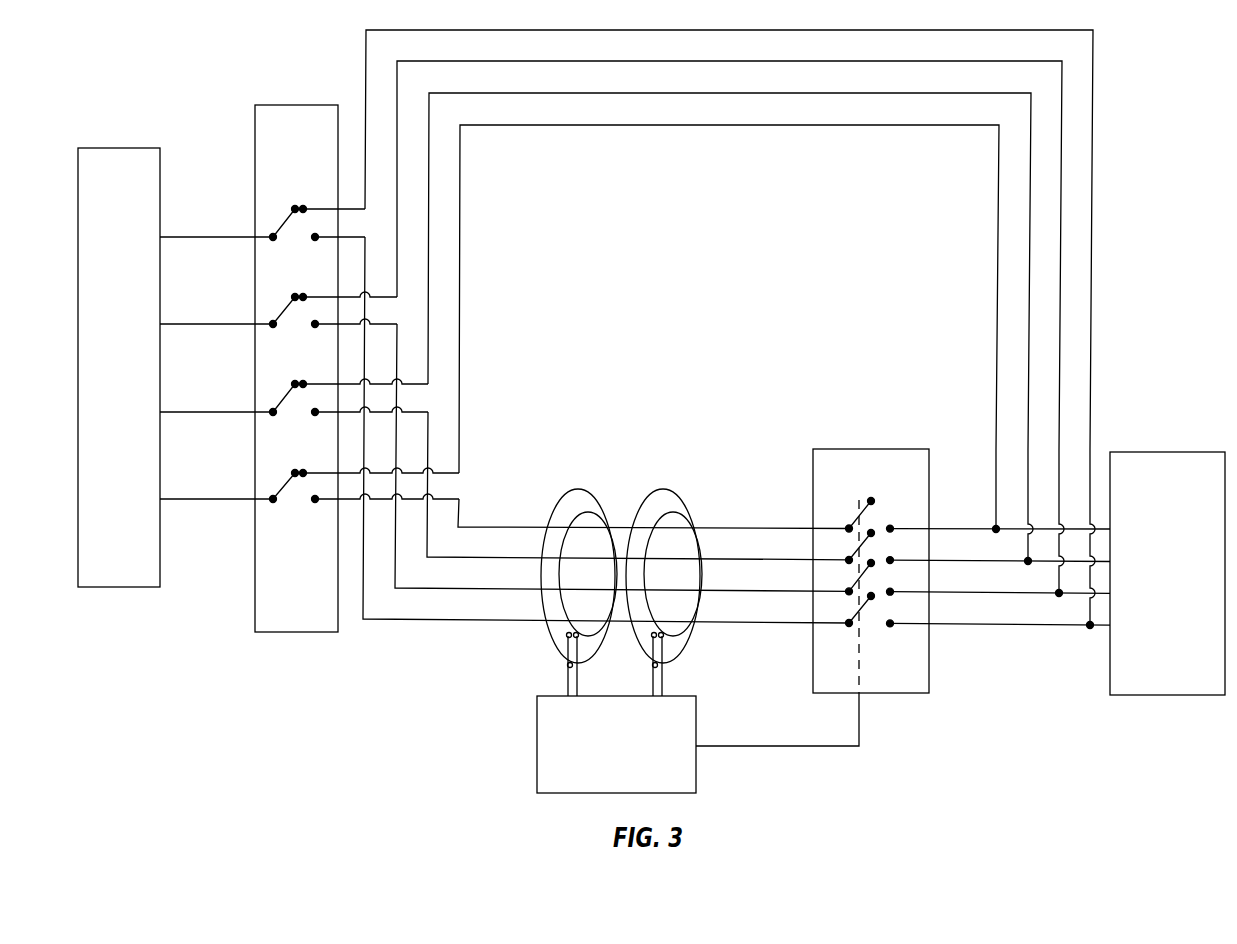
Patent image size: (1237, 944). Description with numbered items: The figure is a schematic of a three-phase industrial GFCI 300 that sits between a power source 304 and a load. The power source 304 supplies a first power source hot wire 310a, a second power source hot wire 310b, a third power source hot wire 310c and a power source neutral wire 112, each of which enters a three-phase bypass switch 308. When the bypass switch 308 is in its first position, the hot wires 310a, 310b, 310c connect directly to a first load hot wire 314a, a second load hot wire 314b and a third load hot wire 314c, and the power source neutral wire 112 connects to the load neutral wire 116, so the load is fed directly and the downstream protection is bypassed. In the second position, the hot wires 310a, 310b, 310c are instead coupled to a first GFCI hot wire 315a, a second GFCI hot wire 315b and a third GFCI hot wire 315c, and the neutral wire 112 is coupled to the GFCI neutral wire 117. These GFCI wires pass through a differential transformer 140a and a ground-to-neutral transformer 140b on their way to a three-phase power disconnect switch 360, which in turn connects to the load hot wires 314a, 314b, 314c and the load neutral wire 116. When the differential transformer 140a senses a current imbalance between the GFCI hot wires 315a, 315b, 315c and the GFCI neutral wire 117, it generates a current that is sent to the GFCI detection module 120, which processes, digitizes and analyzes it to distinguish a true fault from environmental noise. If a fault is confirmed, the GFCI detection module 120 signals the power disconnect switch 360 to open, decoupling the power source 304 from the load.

The 3-phase industrial GFCI 300 is at (1145, 66).
The power source 304 is at (104, 148).
The 3-phase bypass switch 308 is at (255, 115).
The first power source hot wire 310a is at (215, 237).
The second power source hot wire 310b is at (215, 324).
The third power source hot wire 310c is at (215, 412).
The power source neutral wire 112 is at (215, 499).
The first load hot wire 314a is at (367, 30).
The second load hot wire 314b is at (477, 61).
The third load hot wire 314c is at (578, 93).
The load neutral wire 116 is at (679, 125).
The GFCI neutral wire 117 is at (478, 527).
The first GFCI hot wire 315a is at (430, 620).
The second GFCI hot wire 315b is at (440, 588).
The third GFCI hot wire 315c is at (440, 557).
The differential transformer 140a is at (582, 488).
The ground-to-neutral transformer 140b is at (665, 488).
The 3-phase power disconnect switch 360 is at (813, 487).
The GFCI detection module 120 is at (1170, 452).